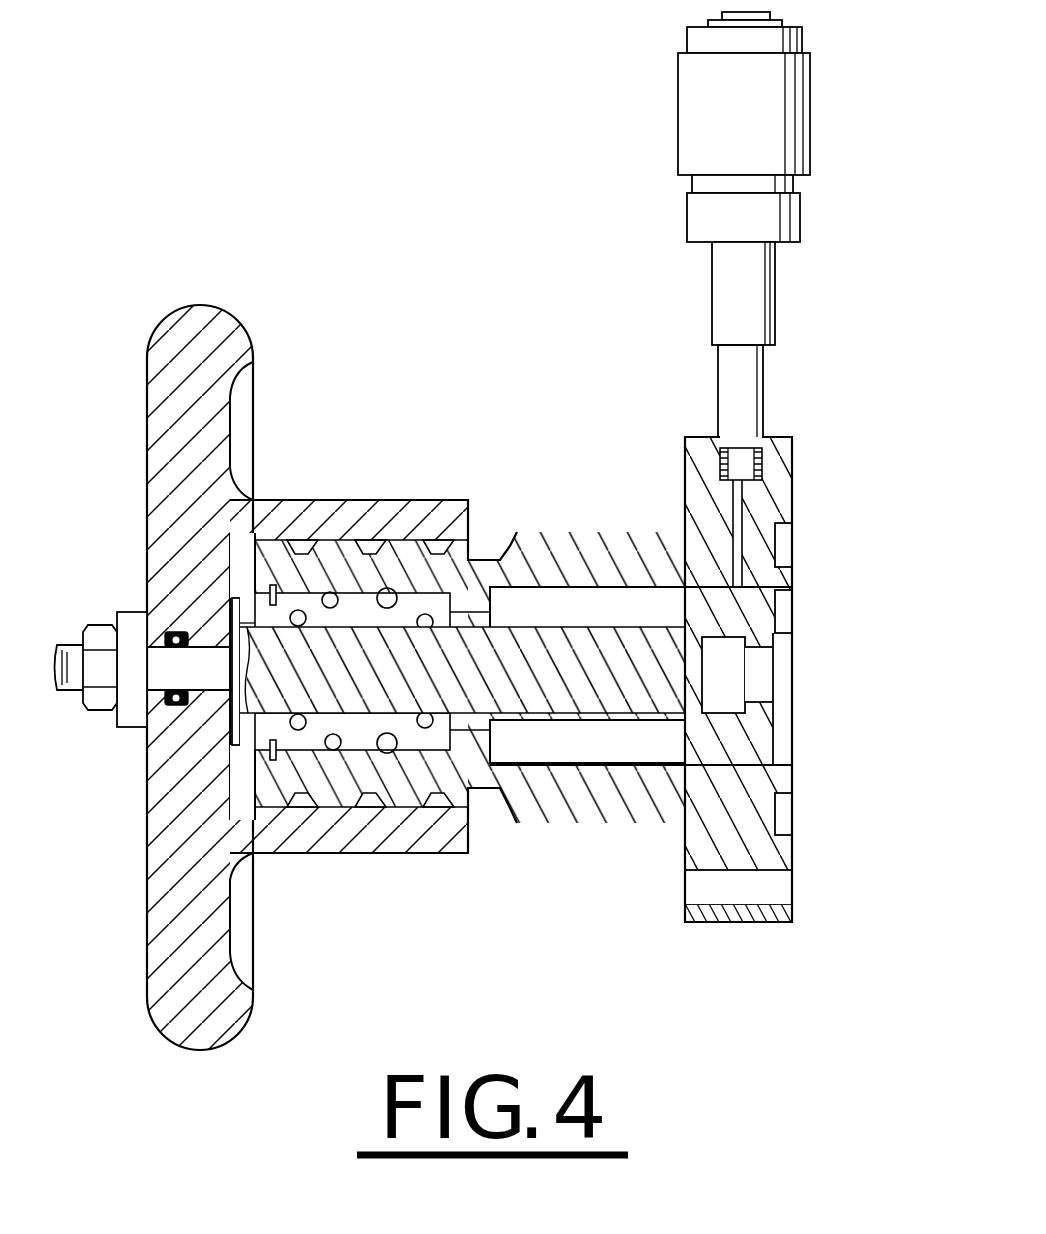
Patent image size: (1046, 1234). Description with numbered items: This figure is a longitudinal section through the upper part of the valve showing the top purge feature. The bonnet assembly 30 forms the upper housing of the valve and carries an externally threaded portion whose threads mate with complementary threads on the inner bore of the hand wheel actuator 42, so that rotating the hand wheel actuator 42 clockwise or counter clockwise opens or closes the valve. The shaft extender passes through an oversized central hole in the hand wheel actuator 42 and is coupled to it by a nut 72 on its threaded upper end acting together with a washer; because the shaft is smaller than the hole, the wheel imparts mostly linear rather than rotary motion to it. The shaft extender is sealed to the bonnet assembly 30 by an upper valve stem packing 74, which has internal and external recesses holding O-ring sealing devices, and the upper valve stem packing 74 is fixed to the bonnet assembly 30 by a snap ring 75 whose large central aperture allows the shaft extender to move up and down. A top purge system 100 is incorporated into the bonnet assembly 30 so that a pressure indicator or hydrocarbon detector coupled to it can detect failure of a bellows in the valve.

The hand wheel actuator 42 is at (231, 316).
The nut 72 is at (101, 624).
The upper valve stem packing 74 is at (395, 555).
The snap ring 75 is at (272, 585).
The bonnet assembly 30 is at (550, 526).
The top purge system 100 is at (770, 388).